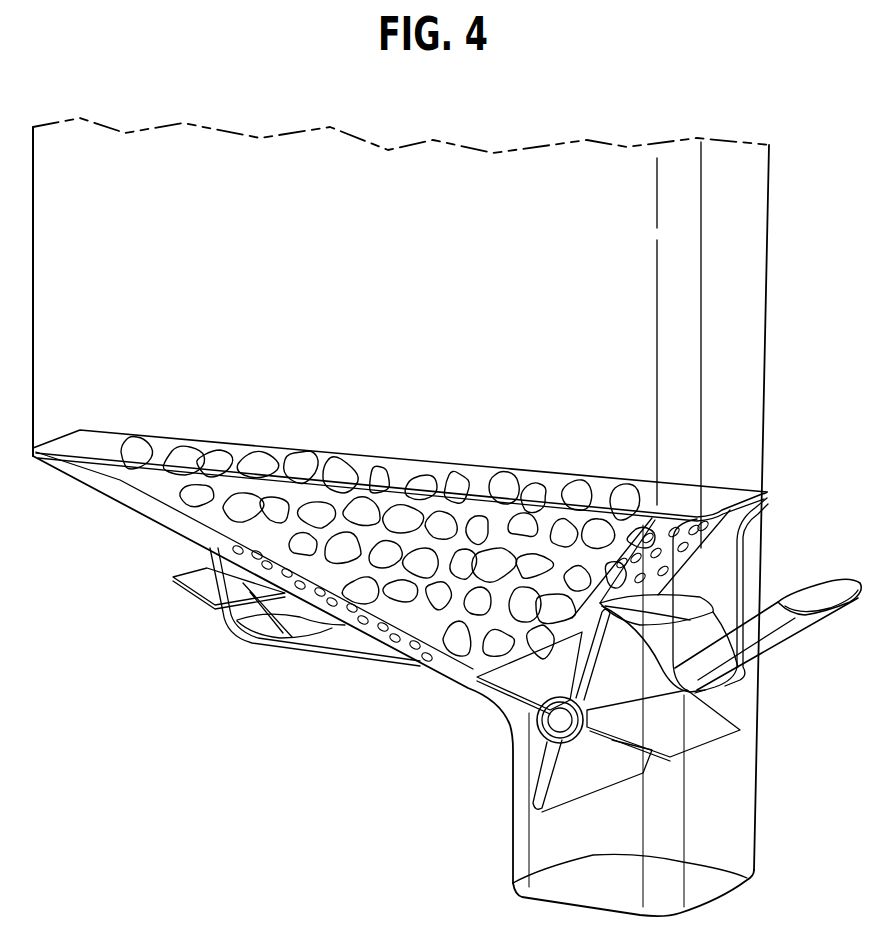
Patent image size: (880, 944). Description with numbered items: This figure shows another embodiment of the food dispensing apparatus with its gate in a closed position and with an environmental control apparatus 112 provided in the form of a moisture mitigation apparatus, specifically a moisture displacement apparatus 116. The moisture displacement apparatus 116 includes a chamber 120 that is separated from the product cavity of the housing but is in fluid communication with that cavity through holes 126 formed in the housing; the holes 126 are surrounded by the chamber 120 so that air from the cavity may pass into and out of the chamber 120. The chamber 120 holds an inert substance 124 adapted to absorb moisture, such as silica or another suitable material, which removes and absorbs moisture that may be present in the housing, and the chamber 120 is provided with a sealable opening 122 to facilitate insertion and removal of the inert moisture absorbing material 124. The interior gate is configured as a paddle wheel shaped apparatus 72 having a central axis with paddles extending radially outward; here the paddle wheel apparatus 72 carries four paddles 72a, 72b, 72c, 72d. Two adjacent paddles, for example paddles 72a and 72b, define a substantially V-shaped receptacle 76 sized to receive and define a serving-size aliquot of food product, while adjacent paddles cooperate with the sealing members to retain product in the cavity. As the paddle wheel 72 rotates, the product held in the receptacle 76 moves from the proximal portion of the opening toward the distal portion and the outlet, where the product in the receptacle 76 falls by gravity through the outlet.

The paddle wheel shaped apparatus 72 is at (566, 724).
The paddle 72a is at (529, 673).
The paddle 72b is at (604, 654).
The paddle 72c is at (663, 725).
The paddle 72d is at (522, 733).
The V-shaped receptacle 76 is at (547, 737).
The environmental control apparatus 112 is at (267, 662).
The moisture displacement apparatus 116 is at (383, 640).
The chamber 120 is at (340, 633).
The sealable opening 122 is at (737, 567).
The inert substance 124 is at (260, 628).
The holes 126 is at (703, 551).